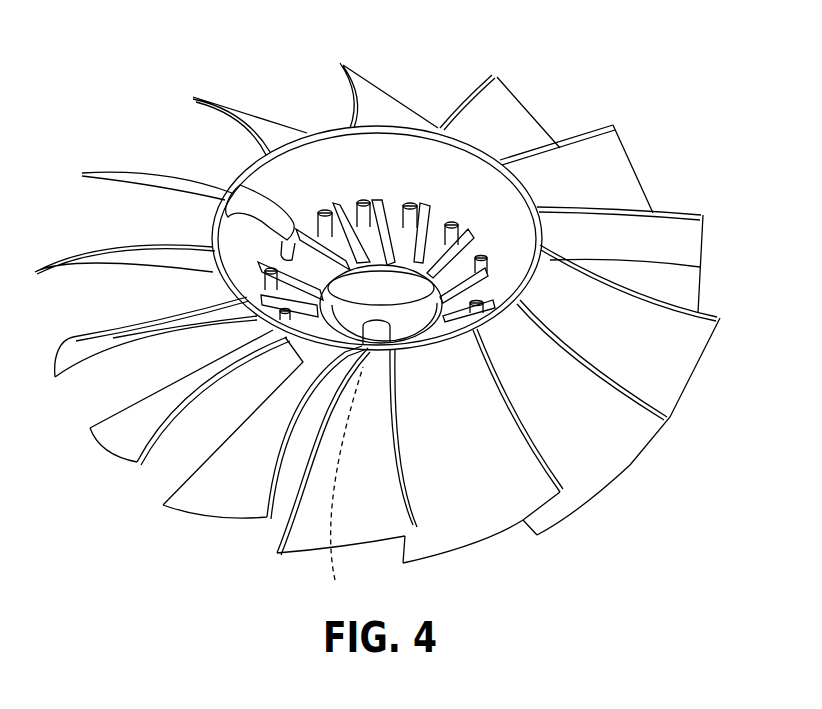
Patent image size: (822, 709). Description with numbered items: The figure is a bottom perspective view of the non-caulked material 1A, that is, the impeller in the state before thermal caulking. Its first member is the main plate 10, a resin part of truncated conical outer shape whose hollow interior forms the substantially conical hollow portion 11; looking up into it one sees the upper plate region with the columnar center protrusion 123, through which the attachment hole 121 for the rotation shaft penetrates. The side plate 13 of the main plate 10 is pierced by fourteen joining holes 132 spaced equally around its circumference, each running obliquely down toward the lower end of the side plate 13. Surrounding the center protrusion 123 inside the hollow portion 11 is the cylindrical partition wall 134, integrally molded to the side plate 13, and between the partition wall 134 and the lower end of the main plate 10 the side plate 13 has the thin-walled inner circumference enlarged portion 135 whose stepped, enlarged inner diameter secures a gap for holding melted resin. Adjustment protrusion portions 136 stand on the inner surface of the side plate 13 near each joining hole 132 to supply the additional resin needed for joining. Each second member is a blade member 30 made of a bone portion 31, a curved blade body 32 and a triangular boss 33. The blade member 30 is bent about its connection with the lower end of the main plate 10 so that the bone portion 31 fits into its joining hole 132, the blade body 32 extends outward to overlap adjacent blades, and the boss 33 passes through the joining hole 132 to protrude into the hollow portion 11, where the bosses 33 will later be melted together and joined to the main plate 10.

The non-caulked material 1A is at (746, 85).
The main plate 10 is at (297, 108).
The hollow portion 11 is at (333, 172).
The side plate 13 is at (690, 267).
The blade member 30 is at (402, 334).
The bone portion 31 is at (343, 486).
The blade body 32 is at (663, 377).
The boss 33 is at (507, 287).
The attachment hole 121 is at (383, 340).
The center protrusion 123 is at (410, 340).
The joining hole 132 is at (342, 370).
The partition wall 134 is at (370, 293).
The inner circumference enlarged portion 135 is at (256, 188).
The adjustment protrusion portion 136 is at (448, 220).